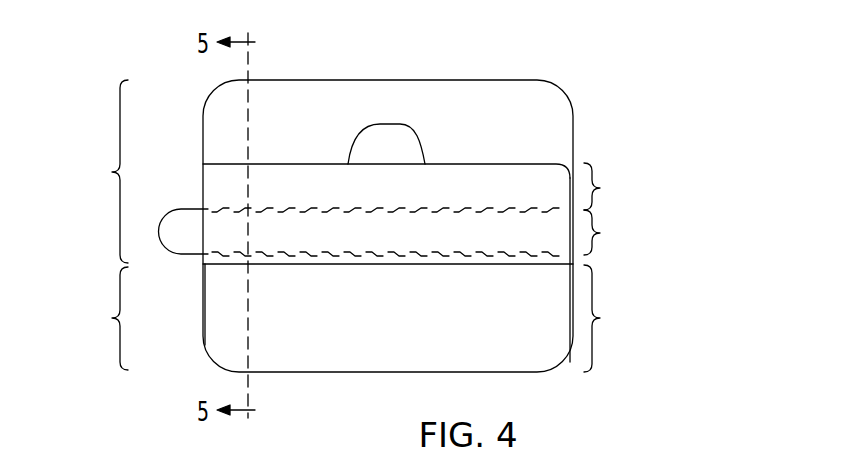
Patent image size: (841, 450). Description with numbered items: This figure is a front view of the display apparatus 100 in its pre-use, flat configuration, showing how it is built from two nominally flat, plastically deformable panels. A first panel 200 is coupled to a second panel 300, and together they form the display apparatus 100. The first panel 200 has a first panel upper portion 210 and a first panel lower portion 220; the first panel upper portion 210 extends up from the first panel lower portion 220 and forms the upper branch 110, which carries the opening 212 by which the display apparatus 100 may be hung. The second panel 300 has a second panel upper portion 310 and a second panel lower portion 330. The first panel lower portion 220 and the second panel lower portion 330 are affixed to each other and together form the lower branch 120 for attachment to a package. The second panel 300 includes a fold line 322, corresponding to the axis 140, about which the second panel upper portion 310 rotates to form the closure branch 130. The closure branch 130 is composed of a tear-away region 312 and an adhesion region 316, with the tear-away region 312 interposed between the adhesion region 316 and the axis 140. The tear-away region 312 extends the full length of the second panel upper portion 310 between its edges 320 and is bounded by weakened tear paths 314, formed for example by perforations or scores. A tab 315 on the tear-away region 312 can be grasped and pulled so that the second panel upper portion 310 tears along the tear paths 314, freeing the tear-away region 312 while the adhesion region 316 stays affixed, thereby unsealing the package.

The display apparatus 100 is at (182, 70).
The first panel 200 is at (500, 93).
The opening 212 is at (377, 140).
The edges of second panel upper portion 320 is at (205, 199).
The tab 315 is at (172, 229).
The adhesion region 316 is at (612, 186).
The tear-away region 312 is at (612, 232).
The tear paths 314 is at (540, 212).
The fold line 322 is at (327, 265).
The second panel 300 is at (357, 374).
The axis 140 is at (192, 290).
The upper branch 110 is at (82, 171).
The first panel upper portion 210 is at (82, 171).
The lower branch 120 is at (82, 318).
The first panel lower portion 220 is at (82, 318).
The closure branch 130 is at (432, 241).
The second panel upper portion 310 is at (640, 163).
The second panel lower portion 330 is at (630, 318).